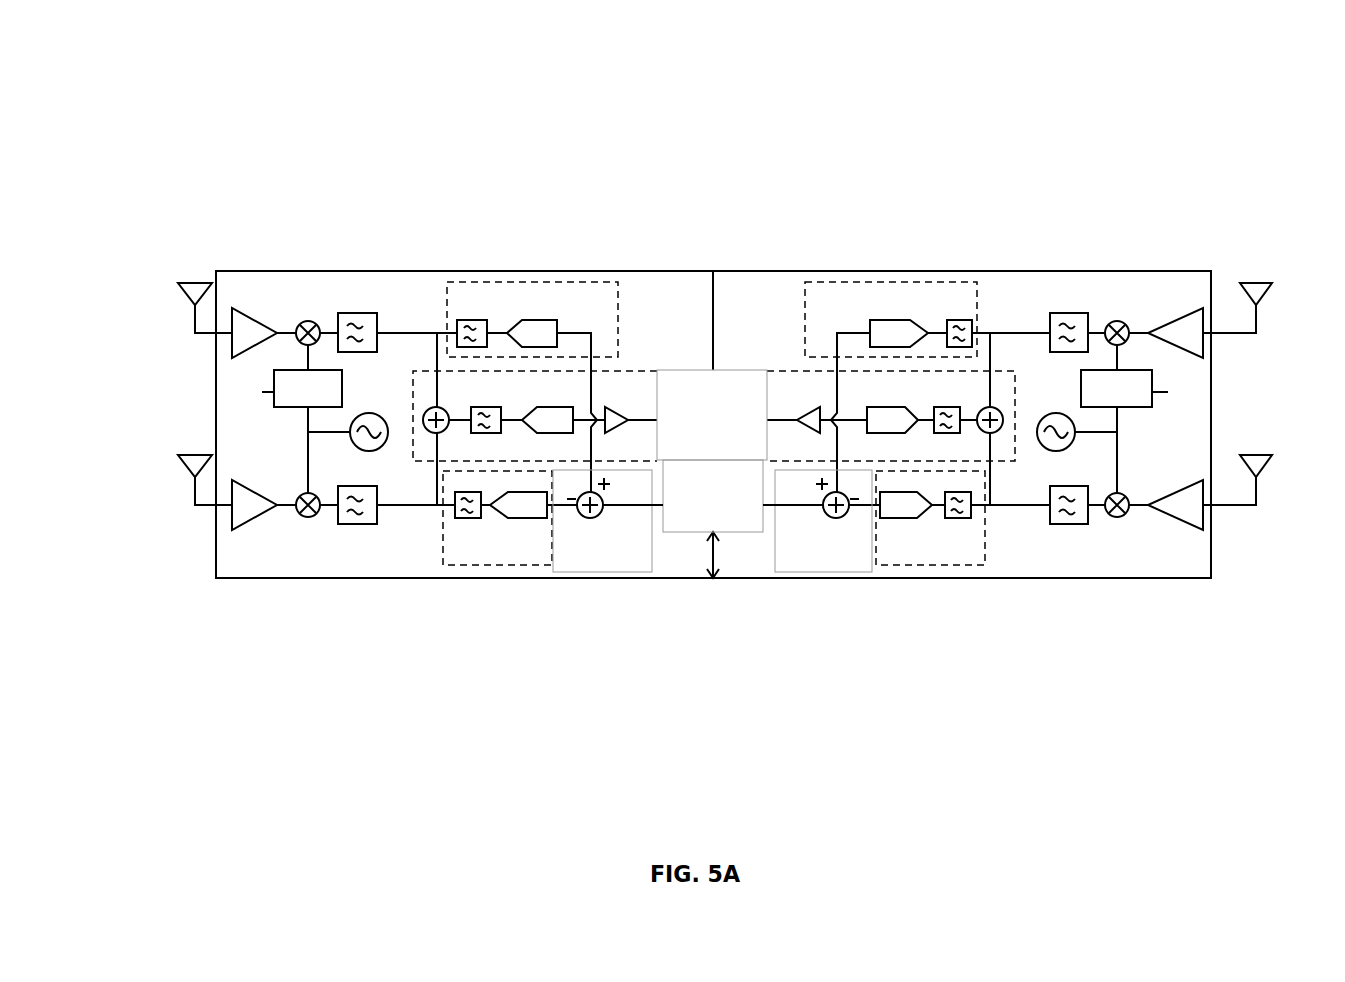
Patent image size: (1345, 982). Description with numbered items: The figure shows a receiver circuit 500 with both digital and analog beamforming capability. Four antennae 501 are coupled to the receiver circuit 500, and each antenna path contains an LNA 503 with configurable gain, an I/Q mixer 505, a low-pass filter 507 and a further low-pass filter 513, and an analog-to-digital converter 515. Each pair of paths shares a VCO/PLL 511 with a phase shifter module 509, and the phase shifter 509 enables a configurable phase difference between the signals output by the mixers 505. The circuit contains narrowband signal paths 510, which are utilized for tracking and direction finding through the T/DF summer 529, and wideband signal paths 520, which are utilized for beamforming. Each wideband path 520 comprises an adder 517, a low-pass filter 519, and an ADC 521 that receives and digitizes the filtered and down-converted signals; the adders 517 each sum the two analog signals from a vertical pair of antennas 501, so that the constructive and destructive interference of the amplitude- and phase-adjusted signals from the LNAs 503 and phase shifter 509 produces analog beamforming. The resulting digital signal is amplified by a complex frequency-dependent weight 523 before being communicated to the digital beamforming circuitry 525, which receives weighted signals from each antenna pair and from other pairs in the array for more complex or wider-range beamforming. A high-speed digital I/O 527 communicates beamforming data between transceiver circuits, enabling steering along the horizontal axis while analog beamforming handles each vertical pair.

The receiver circuit 500 is at (226, 102).
The antennae 501 is at (197, 282).
The LNA 503 is at (240, 307).
The I/Q mixer 505 is at (314, 320).
The low-pass filter 507 is at (378, 314).
The phase shifter module 509 is at (713, 419).
The narrowband signal paths 510 is at (620, 338).
The VCO/PLL 511 is at (369, 412).
The low-pass filter 513 is at (462, 319).
The analog-to-digital converter 515 is at (545, 319).
The adder 517 is at (441, 433).
The low-pass filter 519 is at (490, 433).
The wideband signal paths 520 is at (714, 416).
The ADC 521 is at (540, 433).
The complex frequency-dependent weight 523 is at (612, 433).
The digital beamforming circuitry 525 is at (712, 415).
The high-speed digital I/O 527 is at (713, 496).
The T/DF summer 529 is at (712, 521).